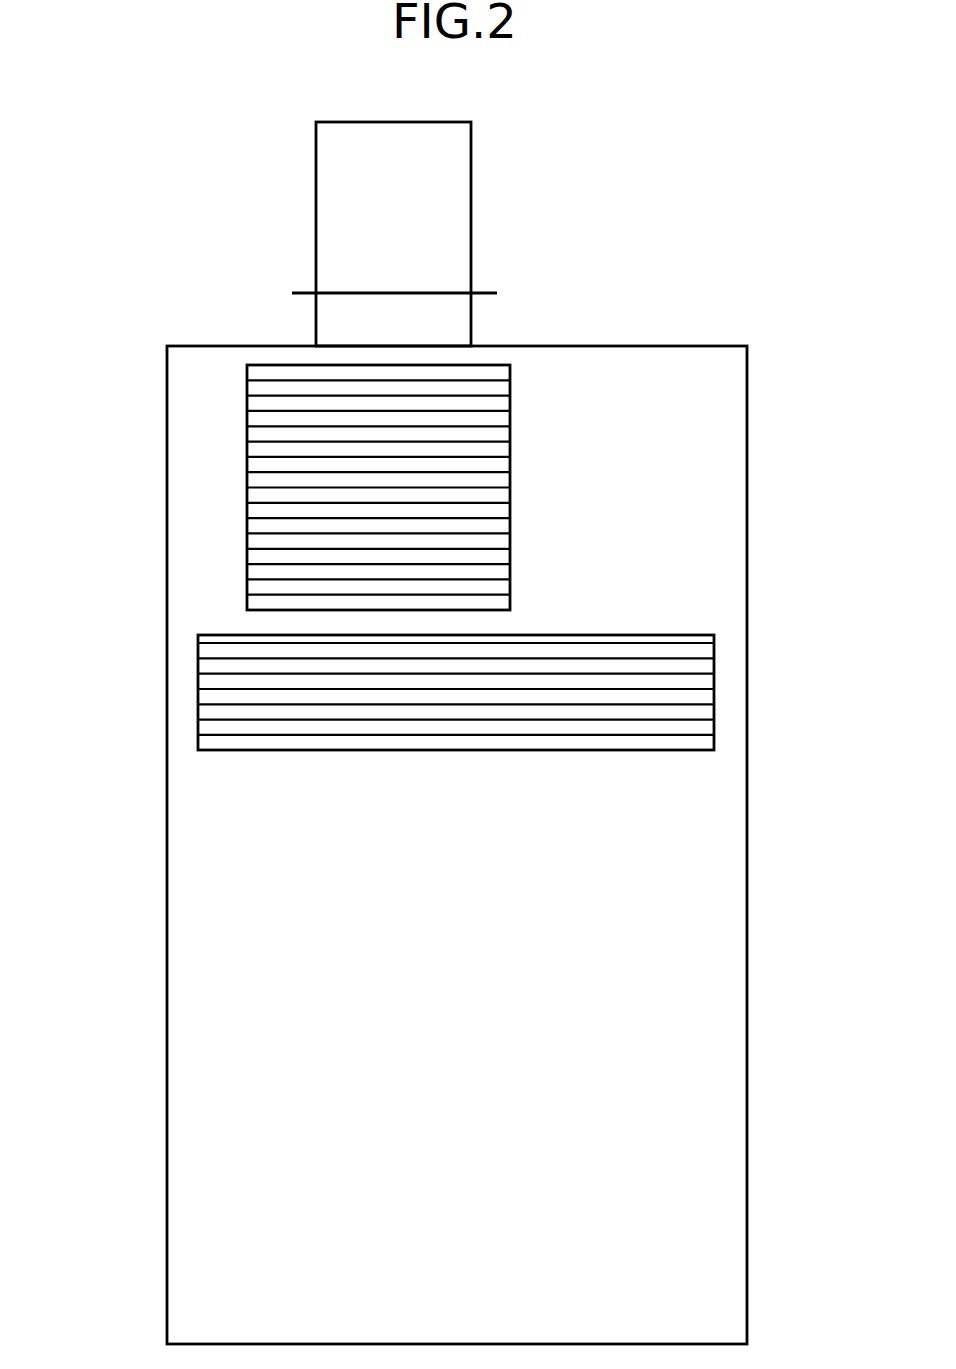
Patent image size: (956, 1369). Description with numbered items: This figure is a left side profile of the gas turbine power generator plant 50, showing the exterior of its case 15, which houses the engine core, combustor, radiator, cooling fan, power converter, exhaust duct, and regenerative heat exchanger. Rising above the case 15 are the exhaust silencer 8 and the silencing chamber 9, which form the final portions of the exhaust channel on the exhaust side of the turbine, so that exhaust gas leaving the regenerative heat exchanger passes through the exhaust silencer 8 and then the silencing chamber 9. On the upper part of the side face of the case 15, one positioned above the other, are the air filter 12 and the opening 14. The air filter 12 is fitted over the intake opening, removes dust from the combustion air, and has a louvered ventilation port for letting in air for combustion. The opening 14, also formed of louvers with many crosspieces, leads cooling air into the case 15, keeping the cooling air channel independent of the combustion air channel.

The gas turbine power generator plant 50 is at (132, 316).
The silencing chamber 9 is at (460, 191).
The exhaust silencer 8 is at (460, 319).
The air filter 12 is at (262, 481).
The opening 14 is at (212, 683).
The case 15 is at (747, 455).